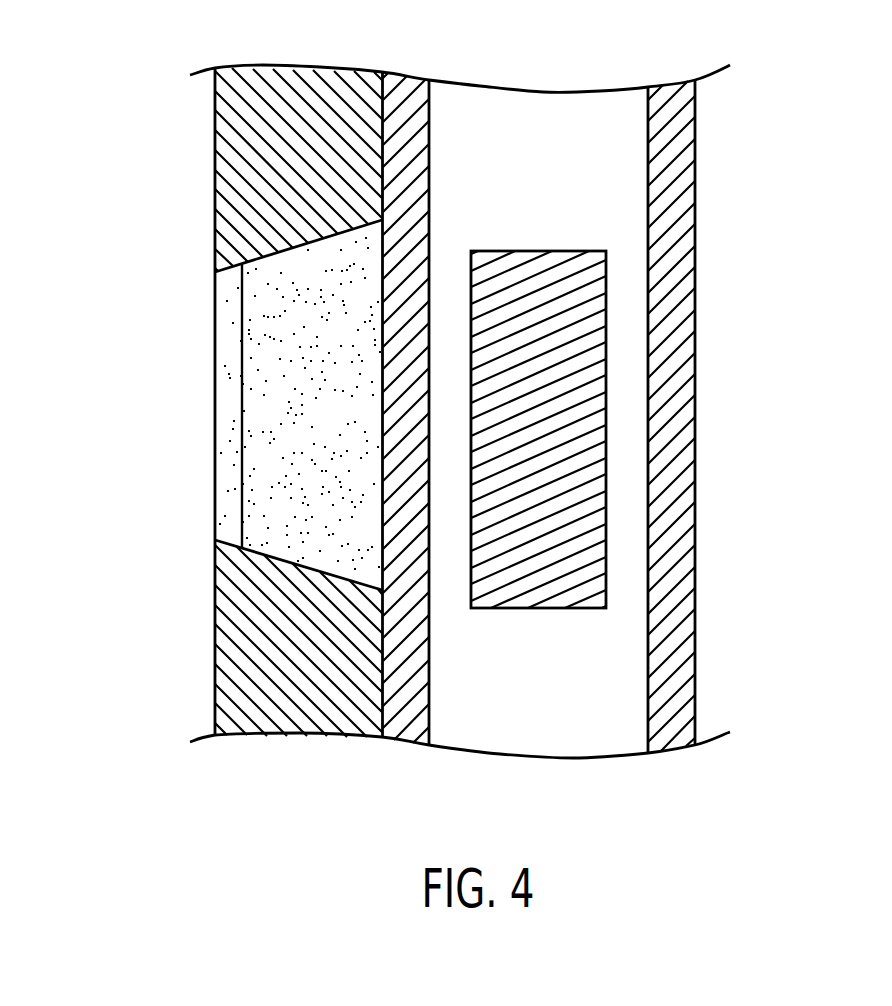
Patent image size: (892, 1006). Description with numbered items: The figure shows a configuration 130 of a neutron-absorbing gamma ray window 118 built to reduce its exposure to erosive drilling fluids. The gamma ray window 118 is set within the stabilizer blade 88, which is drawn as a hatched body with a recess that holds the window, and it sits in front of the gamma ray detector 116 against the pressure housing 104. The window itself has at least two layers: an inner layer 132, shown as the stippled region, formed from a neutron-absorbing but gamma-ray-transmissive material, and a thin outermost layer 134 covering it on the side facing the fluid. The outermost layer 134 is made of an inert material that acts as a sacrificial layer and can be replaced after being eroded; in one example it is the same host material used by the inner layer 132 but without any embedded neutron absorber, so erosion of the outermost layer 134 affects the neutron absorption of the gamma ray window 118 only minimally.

The stabilizer blade 88 is at (233, 168).
The pressure housing 104 is at (410, 722).
The gamma ray detector 116 is at (522, 260).
The gamma ray window 118 is at (197, 522).
The configuration 130 is at (160, 700).
The inner layer 132 is at (273, 480).
The outermost layer 134 is at (228, 393).